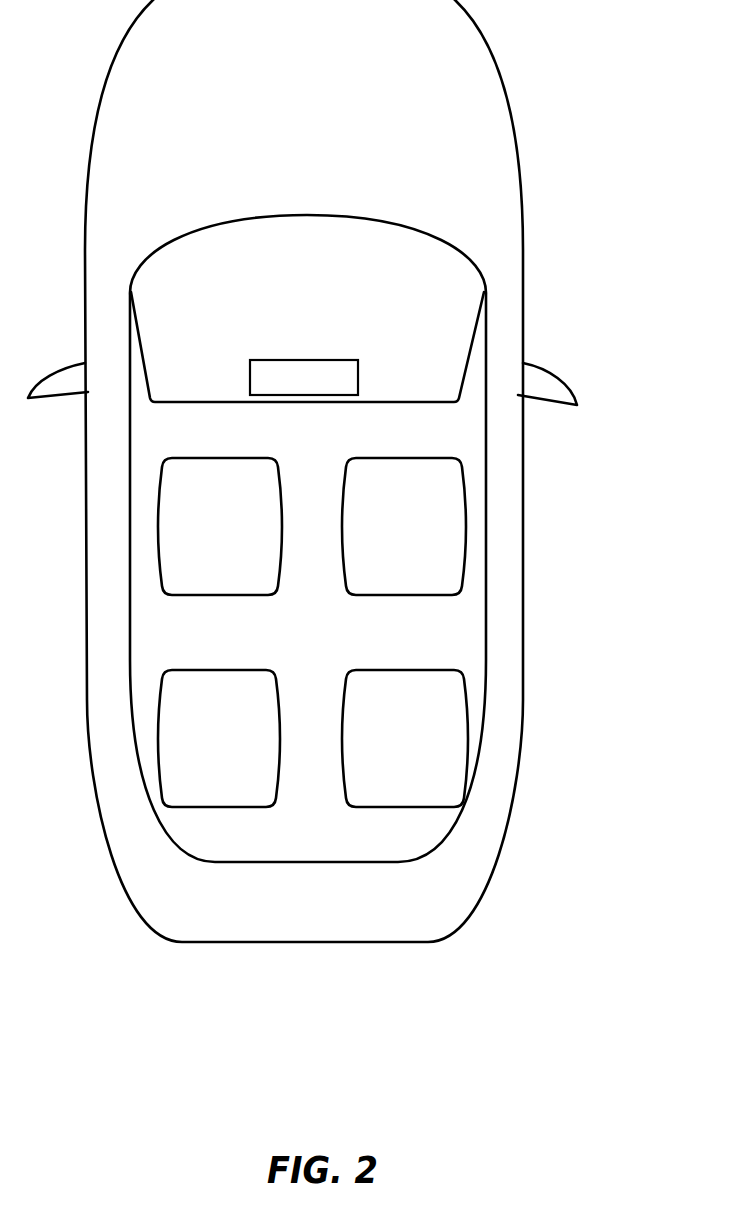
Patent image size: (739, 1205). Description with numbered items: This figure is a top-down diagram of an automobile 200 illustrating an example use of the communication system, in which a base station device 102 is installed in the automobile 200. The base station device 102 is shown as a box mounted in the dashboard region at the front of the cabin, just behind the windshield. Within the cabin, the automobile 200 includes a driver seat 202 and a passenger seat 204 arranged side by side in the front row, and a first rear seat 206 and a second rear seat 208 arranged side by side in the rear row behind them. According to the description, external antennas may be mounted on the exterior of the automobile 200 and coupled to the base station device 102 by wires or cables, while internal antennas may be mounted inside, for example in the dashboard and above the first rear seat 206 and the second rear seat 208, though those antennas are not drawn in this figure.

The automobile 200 is at (522, 170).
The base station device 102 is at (283, 387).
The driver seat 202 is at (203, 534).
The passenger seat 204 is at (382, 531).
The first rear seat 206 is at (200, 751).
The second rear seat 208 is at (388, 756).